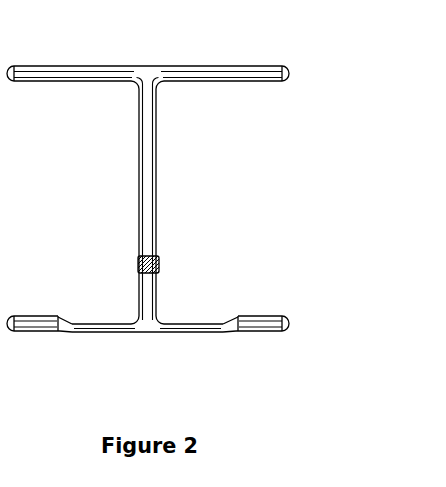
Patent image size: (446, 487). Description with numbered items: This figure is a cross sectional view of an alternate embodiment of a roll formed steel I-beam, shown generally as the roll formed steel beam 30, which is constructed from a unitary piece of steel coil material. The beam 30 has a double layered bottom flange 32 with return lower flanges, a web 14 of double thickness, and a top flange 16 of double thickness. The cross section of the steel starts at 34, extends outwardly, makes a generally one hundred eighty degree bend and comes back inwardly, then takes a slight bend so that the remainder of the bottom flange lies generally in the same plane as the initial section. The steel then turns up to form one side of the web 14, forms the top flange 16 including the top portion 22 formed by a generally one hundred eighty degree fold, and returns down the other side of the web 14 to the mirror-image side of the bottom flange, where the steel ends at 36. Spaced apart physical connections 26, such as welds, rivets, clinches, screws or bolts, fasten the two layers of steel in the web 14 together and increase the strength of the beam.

The web 14 is at (158, 183).
The top flange 16 is at (65, 65).
The top portion of the top flange 22 is at (192, 65).
The physical connections 26 is at (173, 264).
The roll formed steel beam 30 is at (266, 187).
The double layered bottom flange 32 is at (257, 308).
The start of the steel cross section 34 is at (72, 339).
The end of the steel cross section 36 is at (238, 340).